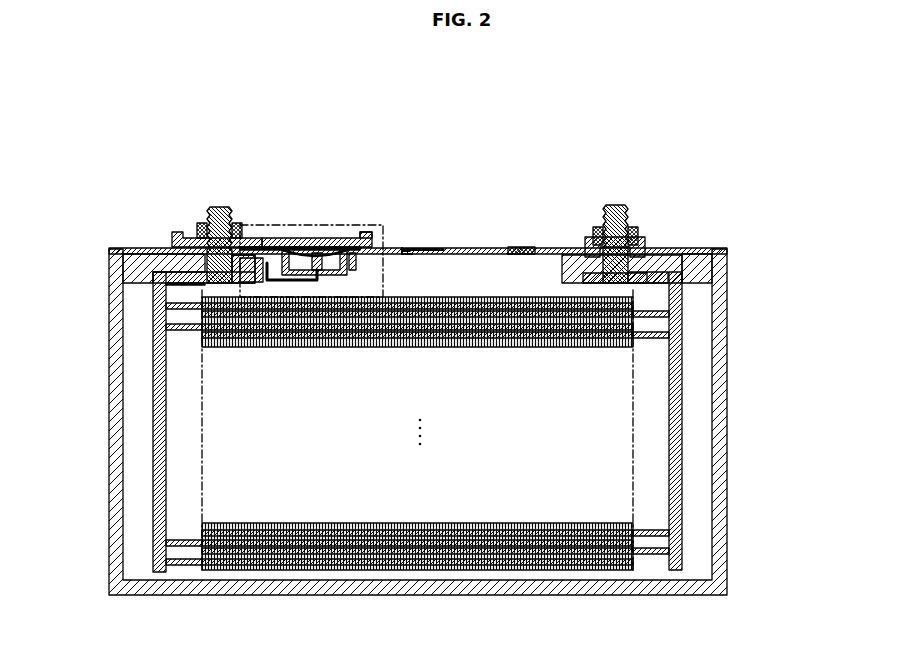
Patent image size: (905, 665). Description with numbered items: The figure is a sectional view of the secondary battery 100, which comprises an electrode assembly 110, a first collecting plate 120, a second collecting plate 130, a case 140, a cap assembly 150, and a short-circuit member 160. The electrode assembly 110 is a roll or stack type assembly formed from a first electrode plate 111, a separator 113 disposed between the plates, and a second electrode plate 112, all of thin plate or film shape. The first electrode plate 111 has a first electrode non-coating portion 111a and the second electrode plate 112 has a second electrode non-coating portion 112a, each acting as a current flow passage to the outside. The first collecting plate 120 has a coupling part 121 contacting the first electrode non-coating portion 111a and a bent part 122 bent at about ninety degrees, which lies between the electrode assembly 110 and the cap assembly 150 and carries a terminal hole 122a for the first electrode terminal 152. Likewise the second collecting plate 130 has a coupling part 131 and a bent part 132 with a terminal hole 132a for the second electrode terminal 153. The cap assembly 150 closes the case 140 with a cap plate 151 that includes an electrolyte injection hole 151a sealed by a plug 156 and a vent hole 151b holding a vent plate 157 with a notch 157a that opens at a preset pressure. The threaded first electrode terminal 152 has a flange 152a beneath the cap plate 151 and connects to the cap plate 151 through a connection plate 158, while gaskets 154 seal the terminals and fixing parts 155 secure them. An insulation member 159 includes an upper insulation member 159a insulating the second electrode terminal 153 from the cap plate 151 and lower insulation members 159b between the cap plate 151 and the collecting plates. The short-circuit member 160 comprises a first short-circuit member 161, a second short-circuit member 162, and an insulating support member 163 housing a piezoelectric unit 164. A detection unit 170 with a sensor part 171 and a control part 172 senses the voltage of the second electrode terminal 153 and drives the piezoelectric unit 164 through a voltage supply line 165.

The secondary battery 100 is at (689, 134).
The electrode assembly 110 is at (421, 468).
The first electrode plate 111 is at (439, 588).
The first electrode non-coating portion 111a is at (652, 555).
The second electrode plate 112 is at (399, 593).
The second electrode non-coating portion 112a is at (183, 566).
The separator 113 is at (432, 563).
The first collecting plate 120 is at (684, 382).
The coupling part 121 is at (682, 439).
The bent part 122 is at (667, 272).
The terminal hole 122a is at (640, 287).
The second collecting plate 130 is at (145, 383).
The coupling part 131 is at (160, 452).
The bent part 132 is at (172, 276).
The terminal hole 132a is at (195, 288).
The case 140 is at (718, 337).
The cap assembly 150 is at (482, 173).
The cap plate 151 is at (485, 248).
The electrolyte injection hole 151a is at (516, 255).
The vent hole 151b is at (413, 255).
The first electrode terminal 152 is at (616, 205).
The flange 152a is at (568, 262).
The second electrode terminal 153 is at (219, 207).
The gaskets 154 is at (182, 237).
The fixing parts 155 is at (237, 223).
The plug 156 is at (522, 248).
The vent plate 157 is at (440, 248).
The notch 157a is at (405, 248).
The connection plate 158 is at (637, 240).
The insulation member 159 is at (376, 232).
The upper insulation member 159a is at (368, 233).
The lower insulation members 159b is at (132, 267).
The short-circuit member 160 is at (334, 238).
The first short-circuit member 161 is at (313, 252).
The second short-circuit member 162 is at (287, 224).
The support member 163 is at (383, 346).
The piezoelectric unit 164 is at (345, 346).
The voltage supply line 165 is at (306, 346).
The detection unit 170 is at (417, 361).
The sensor part 171 is at (236, 346).
The control part 172 is at (268, 346).